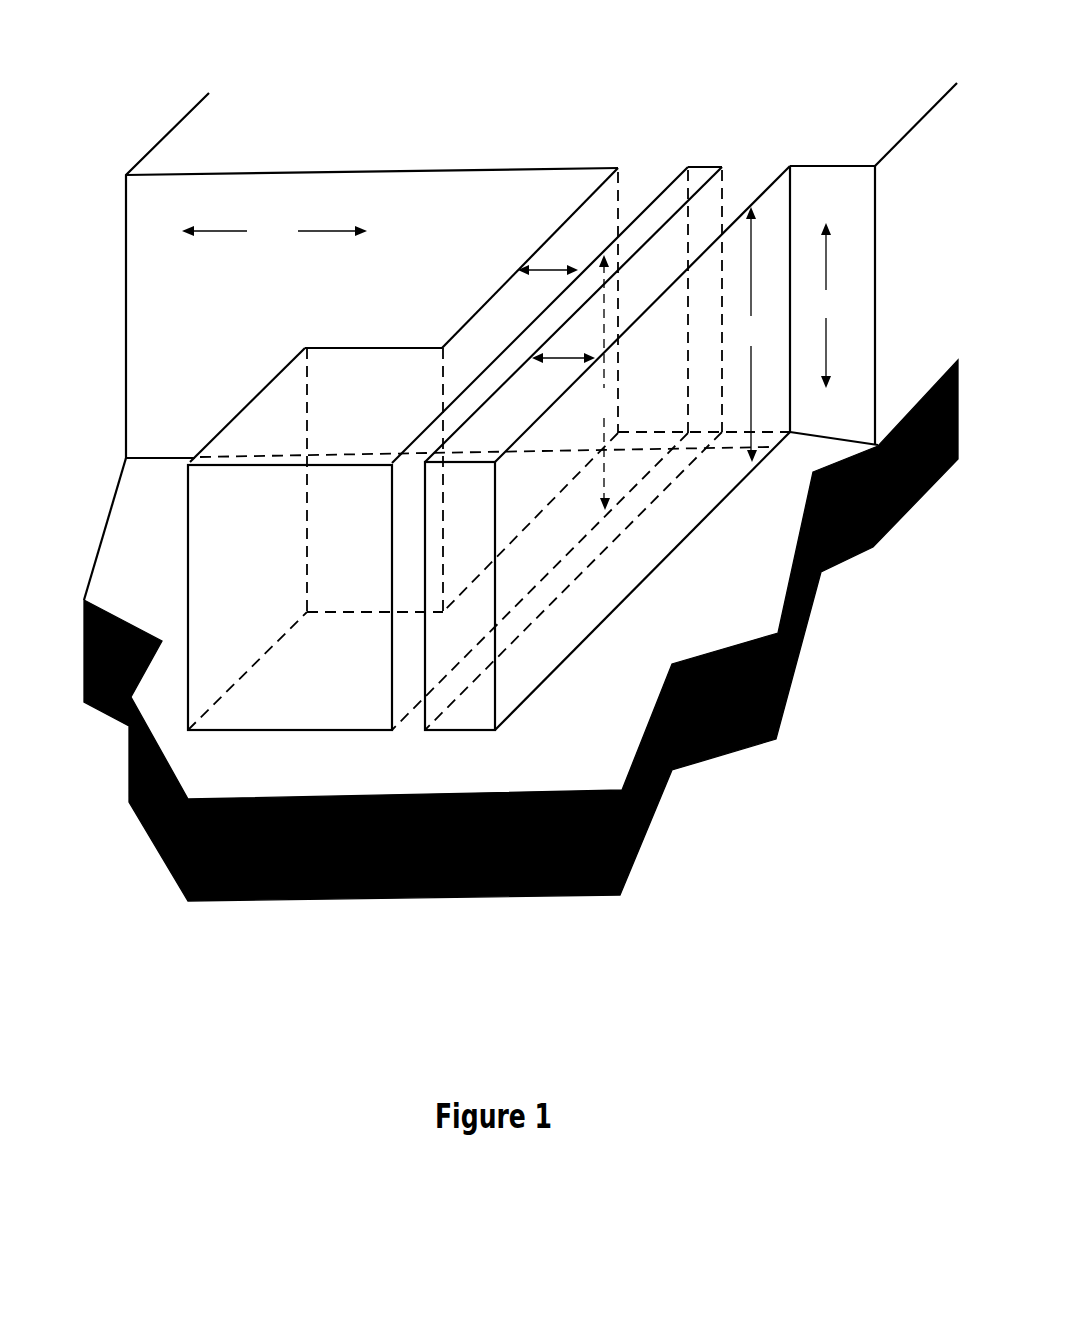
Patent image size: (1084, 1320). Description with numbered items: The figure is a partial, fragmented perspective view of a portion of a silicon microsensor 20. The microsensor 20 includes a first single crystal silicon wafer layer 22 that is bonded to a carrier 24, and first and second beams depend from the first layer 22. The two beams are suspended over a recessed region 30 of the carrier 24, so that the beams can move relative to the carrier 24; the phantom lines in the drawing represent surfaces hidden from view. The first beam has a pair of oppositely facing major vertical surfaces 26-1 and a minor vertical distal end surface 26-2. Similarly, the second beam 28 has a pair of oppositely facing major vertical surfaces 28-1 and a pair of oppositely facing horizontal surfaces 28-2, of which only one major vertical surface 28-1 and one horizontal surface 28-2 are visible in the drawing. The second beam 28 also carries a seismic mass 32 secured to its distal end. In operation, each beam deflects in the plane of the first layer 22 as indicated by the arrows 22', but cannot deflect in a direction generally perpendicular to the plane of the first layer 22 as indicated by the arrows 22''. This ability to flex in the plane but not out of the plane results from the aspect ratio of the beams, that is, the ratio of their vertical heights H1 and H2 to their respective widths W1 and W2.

The silicon microsensor 20 is at (589, 87).
The first single crystal silicon wafer layer 22 is at (448, 261).
The arrows indicating in-plane deflection 22' is at (274, 233).
The arrows indicating out-of-plane direction 22'' is at (873, 264).
The carrier 24 is at (812, 608).
The major vertical surfaces 26-1 is at (610, 580).
The minor vertical distal end surface 26-2 is at (467, 712).
The second beam 28 is at (530, 256).
The major vertical surfaces 28-1 is at (570, 243).
The horizontal surfaces 28-2 is at (474, 316).
The recessed region 30 is at (755, 541).
The seismic mass 32 is at (249, 403).
The beam width W1 is at (561, 375).
The beam width W2 is at (545, 288).
The beam vertical height H1 is at (752, 334).
The beam vertical height H2 is at (605, 382).